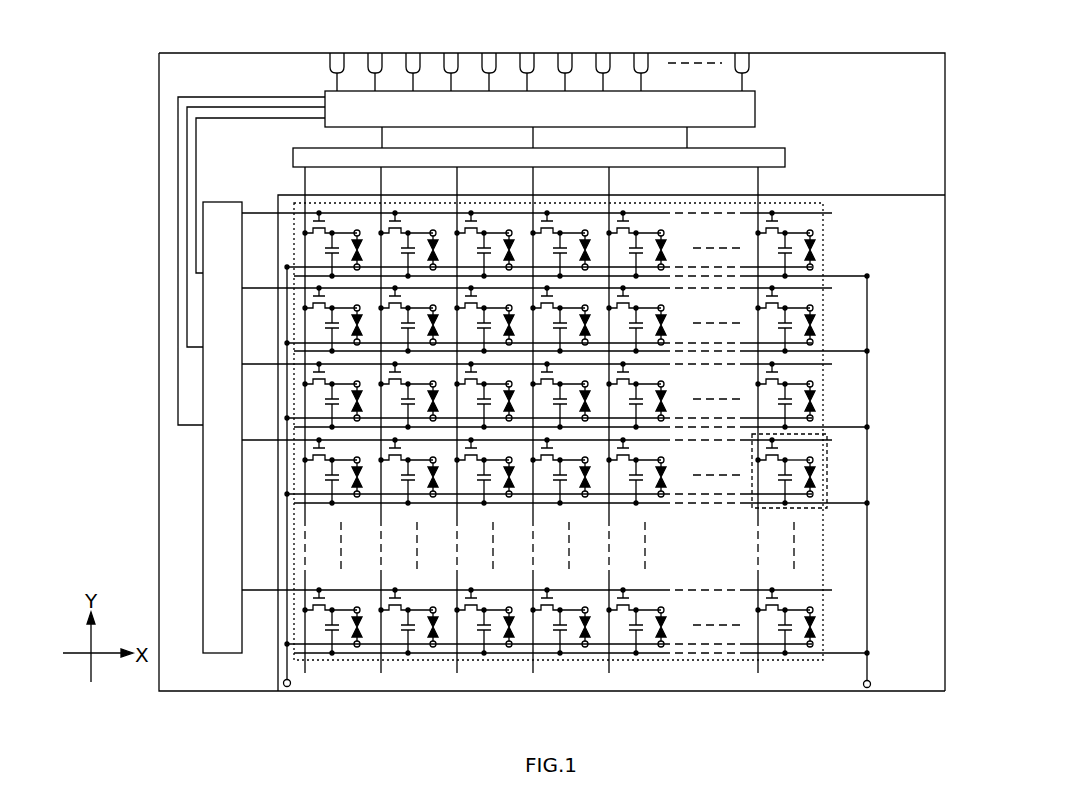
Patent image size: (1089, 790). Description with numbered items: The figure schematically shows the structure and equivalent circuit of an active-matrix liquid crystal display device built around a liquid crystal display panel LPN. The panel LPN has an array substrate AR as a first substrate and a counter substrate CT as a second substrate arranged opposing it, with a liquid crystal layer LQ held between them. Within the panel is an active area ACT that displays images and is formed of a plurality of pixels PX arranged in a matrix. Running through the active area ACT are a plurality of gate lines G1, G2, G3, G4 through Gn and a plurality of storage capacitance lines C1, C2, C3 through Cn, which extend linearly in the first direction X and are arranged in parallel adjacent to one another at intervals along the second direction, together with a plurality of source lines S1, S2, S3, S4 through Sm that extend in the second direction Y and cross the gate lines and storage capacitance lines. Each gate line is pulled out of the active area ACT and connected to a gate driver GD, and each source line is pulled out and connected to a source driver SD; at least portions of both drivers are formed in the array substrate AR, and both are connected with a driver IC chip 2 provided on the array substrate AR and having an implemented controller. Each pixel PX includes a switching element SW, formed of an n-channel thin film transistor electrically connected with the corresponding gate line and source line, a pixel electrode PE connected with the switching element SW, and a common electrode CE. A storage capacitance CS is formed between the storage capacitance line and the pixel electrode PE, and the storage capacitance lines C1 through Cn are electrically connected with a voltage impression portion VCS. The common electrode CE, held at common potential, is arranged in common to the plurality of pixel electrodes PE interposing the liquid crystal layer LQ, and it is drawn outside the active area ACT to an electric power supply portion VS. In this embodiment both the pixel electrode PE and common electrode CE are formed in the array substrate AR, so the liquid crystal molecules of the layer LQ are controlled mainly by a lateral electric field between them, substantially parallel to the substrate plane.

The driver IC chip 2 is at (755, 91).
The liquid crystal display panel LPN is at (970, 66).
The array substrate AR is at (222, 692).
The counter substrate CT is at (918, 195).
The source driver SD is at (786, 157).
The gate driver GD is at (203, 530).
The active area ACT is at (823, 302).
The gate line G1 is at (260, 212).
The gate line G2 is at (260, 287).
The gate line G3 is at (260, 363).
The gate line G4 is at (260, 439).
The gate line Gn is at (260, 589).
The source line S1 is at (308, 188).
The source line S2 is at (384, 188).
The source line S3 is at (460, 188).
The source line S4 is at (536, 188).
The source line Sm is at (761, 188).
The storage capacitance line C1 is at (845, 276).
The storage capacitance line C2 is at (845, 351).
The storage capacitance line C3 is at (845, 427).
The storage capacitance line Cn is at (845, 653).
The electric power supply portion VS is at (290, 686).
The voltage impression portion VCS is at (870, 681).
The pixel PX is at (827, 506).
The switching element SW is at (755, 454).
The storage capacitance CS is at (772, 480).
The pixel electrode PE is at (813, 458).
The liquid crystal layer LQ is at (813, 475).
The common electrode CE is at (813, 494).